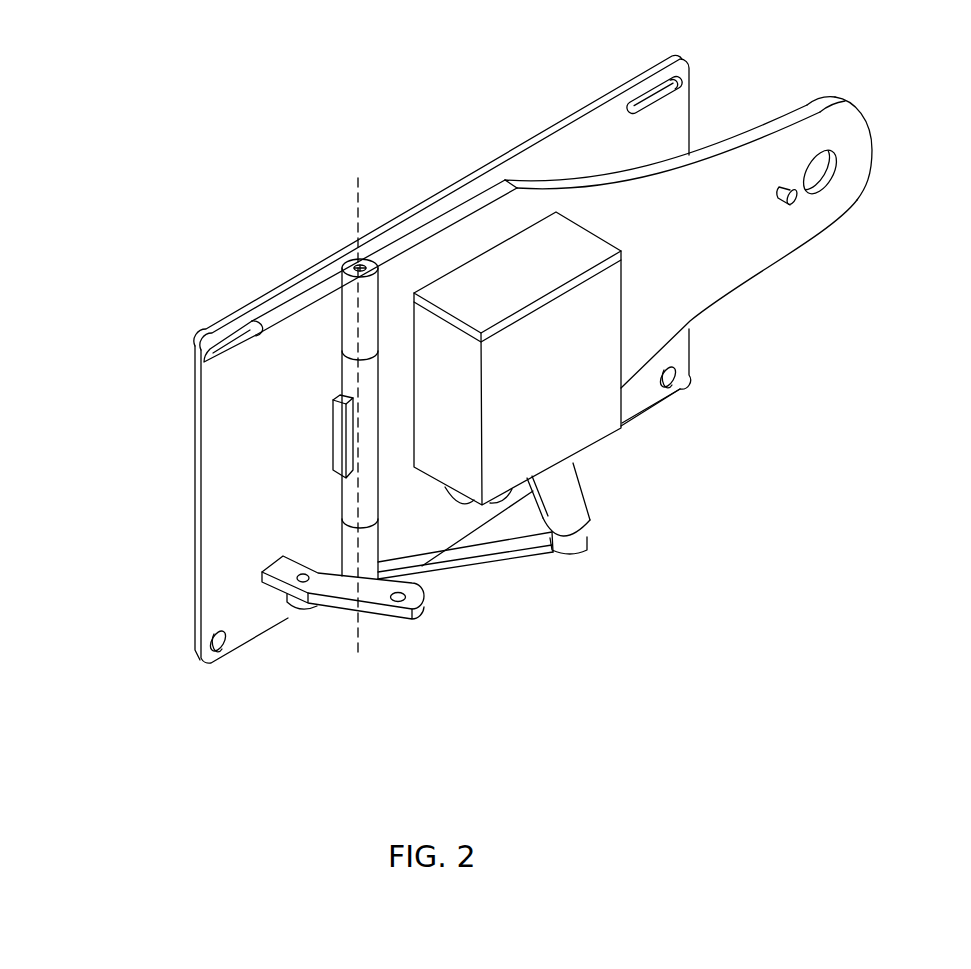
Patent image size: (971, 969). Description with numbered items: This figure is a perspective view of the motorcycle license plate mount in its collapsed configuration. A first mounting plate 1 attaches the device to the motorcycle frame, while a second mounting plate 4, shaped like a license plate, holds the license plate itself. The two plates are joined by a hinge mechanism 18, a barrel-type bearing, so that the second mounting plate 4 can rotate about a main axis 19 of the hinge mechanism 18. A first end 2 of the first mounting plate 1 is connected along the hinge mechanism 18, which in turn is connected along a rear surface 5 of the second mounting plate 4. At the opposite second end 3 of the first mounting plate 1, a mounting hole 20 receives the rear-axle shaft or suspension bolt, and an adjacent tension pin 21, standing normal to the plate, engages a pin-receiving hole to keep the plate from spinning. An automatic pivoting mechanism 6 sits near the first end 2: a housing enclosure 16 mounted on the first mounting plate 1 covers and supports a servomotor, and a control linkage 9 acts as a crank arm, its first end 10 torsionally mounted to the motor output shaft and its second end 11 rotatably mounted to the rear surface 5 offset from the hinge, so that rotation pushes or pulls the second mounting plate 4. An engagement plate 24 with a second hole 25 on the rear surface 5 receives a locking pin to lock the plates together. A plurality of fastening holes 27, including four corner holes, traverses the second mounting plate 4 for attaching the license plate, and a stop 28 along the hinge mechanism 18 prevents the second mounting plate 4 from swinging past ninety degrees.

The first mounting plate 1 is at (725, 242).
The first end 2 is at (333, 394).
The second end 3 is at (880, 125).
The second mounting plate 4 is at (201, 450).
The rear surface 5 is at (276, 326).
The automatic pivoting mechanism 6 is at (602, 436).
The control linkage 9 is at (520, 583).
The first end 10 is at (576, 463).
The second end 11 is at (299, 611).
The housing enclosure 16 is at (614, 296).
The hinge mechanism 18 is at (352, 263).
The main axis 19 is at (358, 180).
The mounting hole 20 is at (826, 177).
The tension pin 21 is at (775, 195).
The engagement plate 24 is at (354, 602).
The second hole 25 is at (400, 592).
The plurality of fastening holes 27 is at (243, 345).
The stop 28 is at (334, 437).